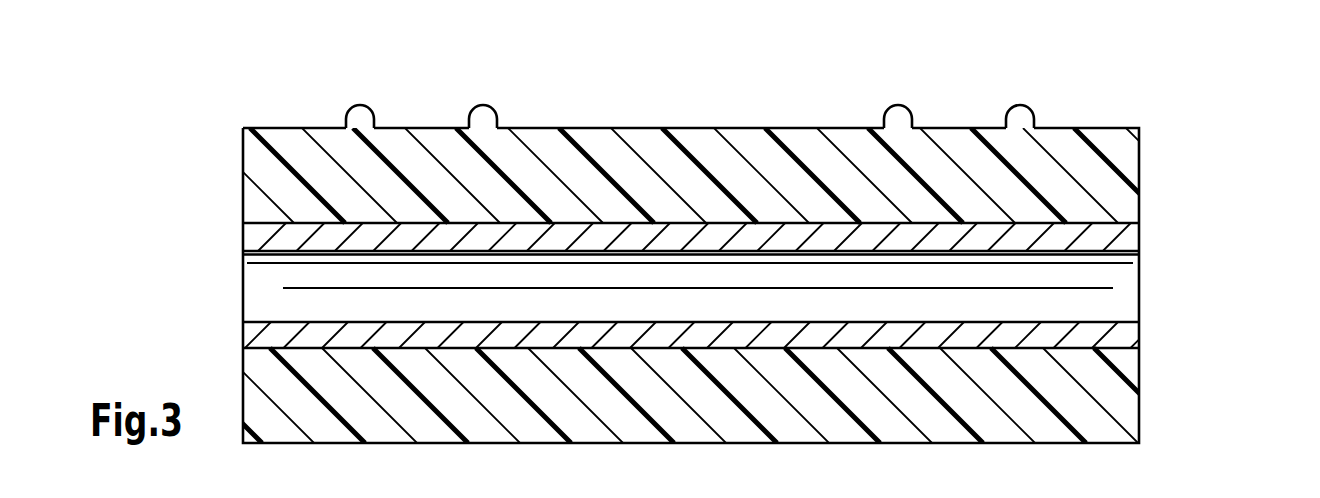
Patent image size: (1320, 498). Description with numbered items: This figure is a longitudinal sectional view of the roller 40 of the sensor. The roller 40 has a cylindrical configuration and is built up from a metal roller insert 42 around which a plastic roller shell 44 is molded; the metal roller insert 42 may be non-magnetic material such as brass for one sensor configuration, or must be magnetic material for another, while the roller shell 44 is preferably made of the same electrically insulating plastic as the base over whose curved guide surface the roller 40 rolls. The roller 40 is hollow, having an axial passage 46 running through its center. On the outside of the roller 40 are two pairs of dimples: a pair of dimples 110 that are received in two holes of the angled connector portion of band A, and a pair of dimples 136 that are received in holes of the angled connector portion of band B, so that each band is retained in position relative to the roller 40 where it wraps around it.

The roller 40 is at (1188, 128).
The metal roller insert 42 is at (1140, 236).
The plastic roller shell 44 is at (1142, 390).
The axial passage 46 is at (1127, 288).
The pair of dimples 110 is at (483, 113).
The pair of dimples 136 is at (1020, 112).